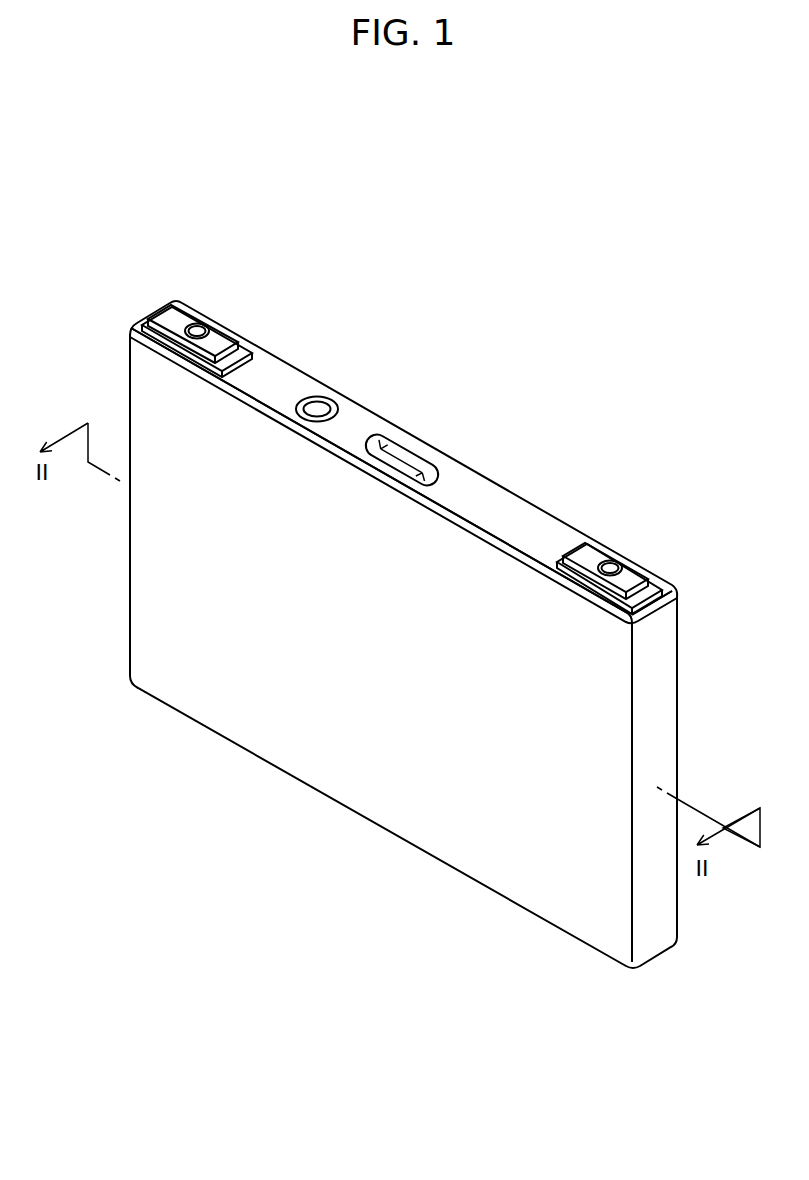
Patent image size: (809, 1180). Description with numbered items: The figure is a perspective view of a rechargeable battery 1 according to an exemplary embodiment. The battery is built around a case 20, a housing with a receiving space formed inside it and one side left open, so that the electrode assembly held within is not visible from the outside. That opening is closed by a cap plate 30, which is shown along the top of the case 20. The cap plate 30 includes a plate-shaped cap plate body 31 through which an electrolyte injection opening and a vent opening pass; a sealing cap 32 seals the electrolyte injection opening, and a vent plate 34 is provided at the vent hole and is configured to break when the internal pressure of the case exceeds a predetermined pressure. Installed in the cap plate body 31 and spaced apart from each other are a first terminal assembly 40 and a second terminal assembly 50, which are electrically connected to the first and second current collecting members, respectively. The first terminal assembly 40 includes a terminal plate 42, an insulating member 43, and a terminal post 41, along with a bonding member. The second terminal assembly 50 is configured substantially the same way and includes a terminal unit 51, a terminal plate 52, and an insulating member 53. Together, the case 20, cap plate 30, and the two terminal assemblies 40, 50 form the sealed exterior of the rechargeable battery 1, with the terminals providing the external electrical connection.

The rechargeable battery 1 is at (457, 158).
The case 20 is at (372, 800).
The cap plate 30 is at (401, 470).
The cap plate body 31 is at (483, 490).
The sealing cap 32 is at (325, 403).
The vent plate 34 is at (412, 455).
The first terminal assembly 40 is at (222, 312).
The terminal post 41 is at (198, 325).
The terminal plate 42 is at (176, 314).
The insulating member 43 is at (244, 348).
The second terminal assembly 50 is at (639, 551).
The terminal unit 51 is at (613, 565).
The terminal plate 52 is at (588, 553).
The insulating member 53 is at (660, 585).